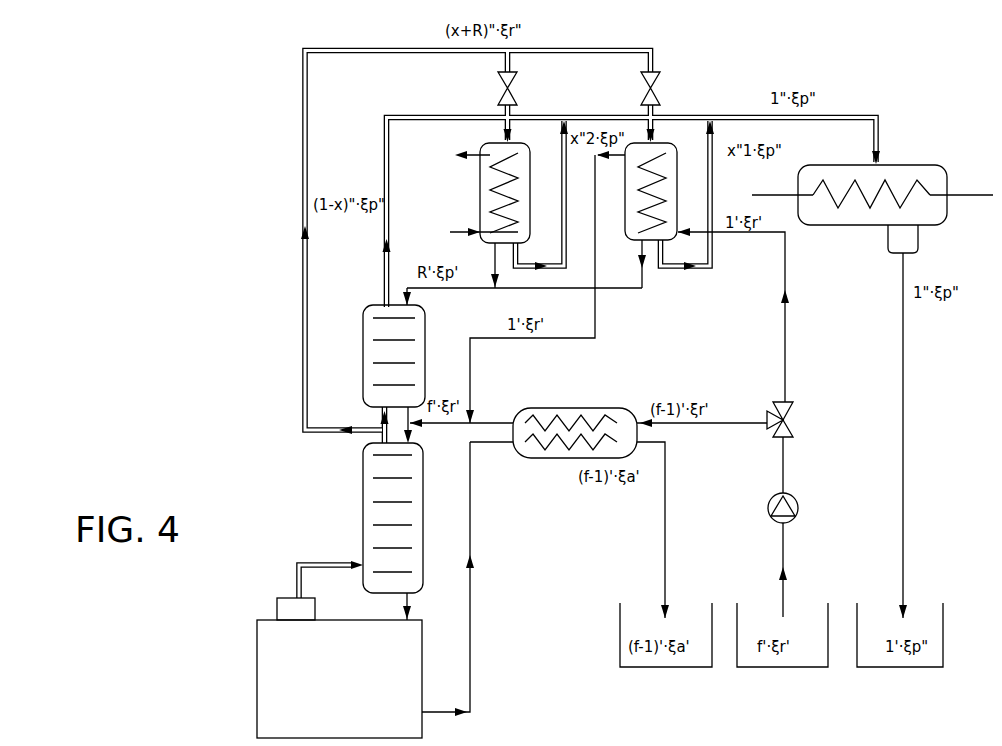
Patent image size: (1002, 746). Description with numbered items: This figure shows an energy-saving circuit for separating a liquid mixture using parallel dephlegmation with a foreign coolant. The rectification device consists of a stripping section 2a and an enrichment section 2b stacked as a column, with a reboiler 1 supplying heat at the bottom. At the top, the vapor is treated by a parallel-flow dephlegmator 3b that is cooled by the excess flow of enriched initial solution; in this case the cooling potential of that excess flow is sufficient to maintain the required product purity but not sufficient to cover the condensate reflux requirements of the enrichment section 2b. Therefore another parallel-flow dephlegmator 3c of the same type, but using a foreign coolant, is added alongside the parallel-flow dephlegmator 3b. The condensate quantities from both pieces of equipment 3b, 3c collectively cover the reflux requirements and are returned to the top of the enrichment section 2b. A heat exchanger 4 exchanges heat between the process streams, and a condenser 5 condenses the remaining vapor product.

The reboiler 1 is at (262, 680).
The stripping section of rectification device 2a is at (372, 510).
The enrichment section of rectification device 2b is at (375, 350).
The parallel-flow dephlegmator 3b is at (671, 158).
The parallel-flow dephlegmator 3c is at (481, 178).
The heat exchanger 4 is at (523, 458).
The condenser 5 is at (906, 166).